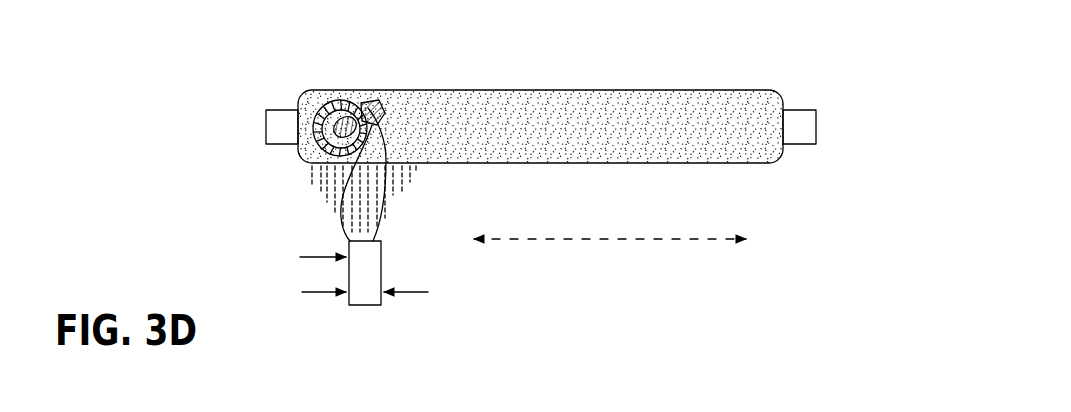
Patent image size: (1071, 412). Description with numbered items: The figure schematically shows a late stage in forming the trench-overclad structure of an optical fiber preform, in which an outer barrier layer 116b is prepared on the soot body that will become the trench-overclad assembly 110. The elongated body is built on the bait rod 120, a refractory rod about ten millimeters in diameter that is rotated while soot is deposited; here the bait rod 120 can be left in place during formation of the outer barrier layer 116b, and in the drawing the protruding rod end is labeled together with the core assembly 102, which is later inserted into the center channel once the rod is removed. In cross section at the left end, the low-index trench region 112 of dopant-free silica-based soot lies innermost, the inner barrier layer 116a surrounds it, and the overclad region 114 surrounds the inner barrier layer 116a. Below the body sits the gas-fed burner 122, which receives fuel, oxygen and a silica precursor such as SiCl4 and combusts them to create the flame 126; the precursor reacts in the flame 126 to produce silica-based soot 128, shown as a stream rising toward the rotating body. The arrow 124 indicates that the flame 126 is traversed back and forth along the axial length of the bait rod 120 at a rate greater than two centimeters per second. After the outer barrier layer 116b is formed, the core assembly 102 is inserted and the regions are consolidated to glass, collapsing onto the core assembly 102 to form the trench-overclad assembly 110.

The trench-overclad assembly 110 is at (506, 70).
The core assembly 102 is at (810, 91).
The bait rod 120 is at (797, 110).
The inner barrier layer 116a is at (318, 108).
The outer barrier layer 116b is at (600, 90).
The low-index trench region 112 is at (347, 104).
The overclad region 114 is at (372, 125).
The flame 126 is at (342, 198).
The silica-based soot 128 is at (400, 183).
The gas-fed burner 122 is at (365, 306).
The arrow 124 is at (573, 238).